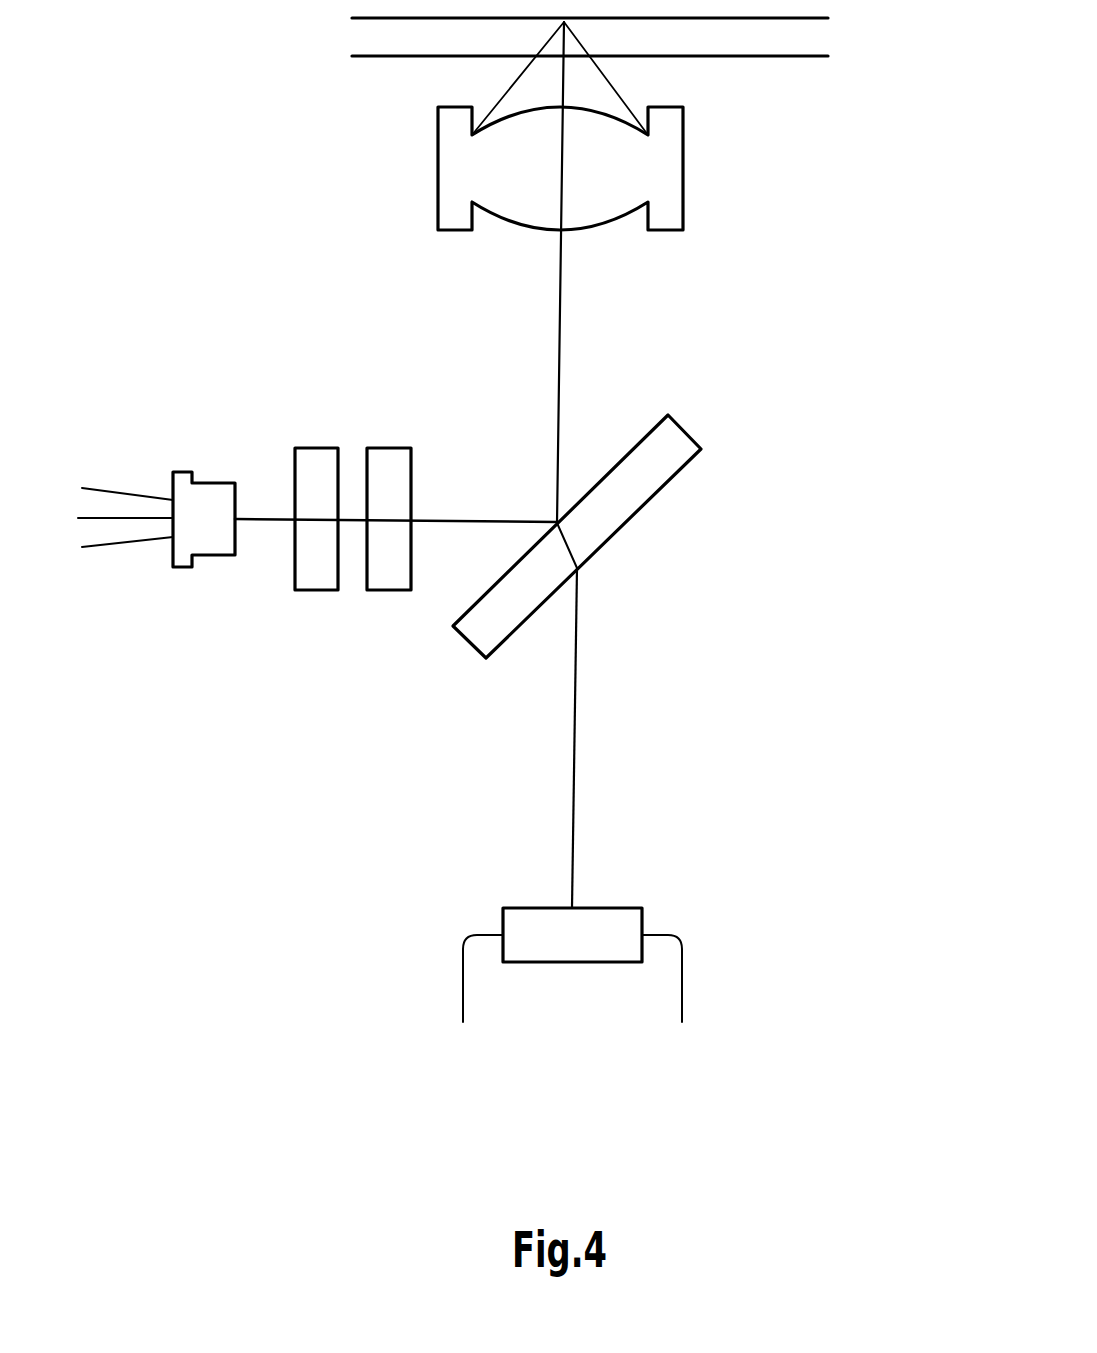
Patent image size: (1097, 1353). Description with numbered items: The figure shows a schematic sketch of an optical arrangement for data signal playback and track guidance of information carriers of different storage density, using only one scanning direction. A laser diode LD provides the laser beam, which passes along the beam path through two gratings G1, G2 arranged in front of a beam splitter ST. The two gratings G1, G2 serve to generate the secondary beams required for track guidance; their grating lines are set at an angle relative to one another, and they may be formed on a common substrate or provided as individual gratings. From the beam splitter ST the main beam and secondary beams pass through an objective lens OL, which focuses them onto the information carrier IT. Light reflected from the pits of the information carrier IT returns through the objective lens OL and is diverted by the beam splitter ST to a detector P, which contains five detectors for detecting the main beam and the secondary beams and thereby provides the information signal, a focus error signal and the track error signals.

The information carrier IT is at (815, 42).
The objective lens OL is at (683, 173).
The laser diode LD is at (156, 485).
The first grating G1 is at (317, 590).
The second grating G2 is at (390, 590).
The beam splitter ST is at (583, 543).
The detector P is at (612, 965).